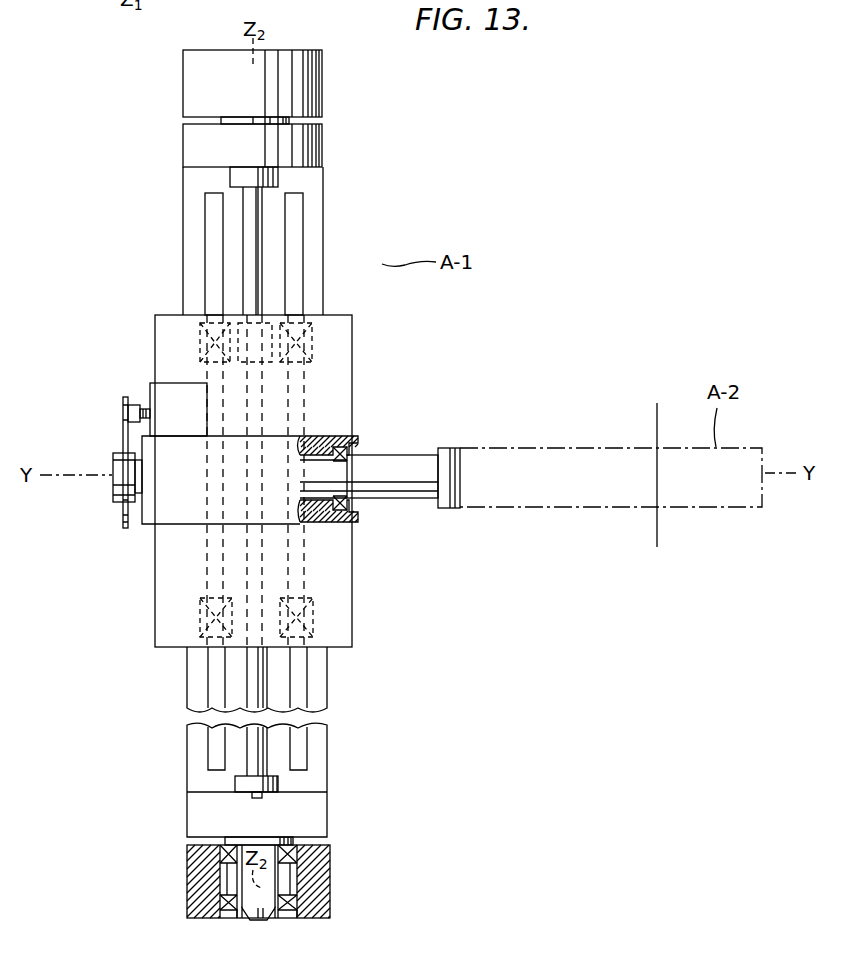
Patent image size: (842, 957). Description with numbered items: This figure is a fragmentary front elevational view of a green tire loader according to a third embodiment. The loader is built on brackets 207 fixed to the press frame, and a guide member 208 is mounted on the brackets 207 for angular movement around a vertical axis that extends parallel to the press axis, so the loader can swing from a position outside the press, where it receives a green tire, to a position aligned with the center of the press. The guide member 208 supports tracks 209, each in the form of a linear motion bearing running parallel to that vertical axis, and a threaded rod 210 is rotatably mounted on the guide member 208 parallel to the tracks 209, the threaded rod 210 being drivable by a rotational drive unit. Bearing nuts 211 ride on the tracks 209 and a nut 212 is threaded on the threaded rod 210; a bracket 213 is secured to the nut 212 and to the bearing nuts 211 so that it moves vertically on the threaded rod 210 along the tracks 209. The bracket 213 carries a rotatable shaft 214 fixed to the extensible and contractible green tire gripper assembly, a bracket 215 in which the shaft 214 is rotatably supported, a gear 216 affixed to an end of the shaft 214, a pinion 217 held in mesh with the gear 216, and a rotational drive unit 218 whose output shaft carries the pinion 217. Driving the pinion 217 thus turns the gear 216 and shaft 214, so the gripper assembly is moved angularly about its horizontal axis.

The brackets 207 is at (322, 92).
The guide member 208 is at (322, 160).
The tracks 209 is at (205, 235).
The threaded rod 210 is at (263, 252).
The bearing nuts 211 is at (200, 327).
The nut 212 is at (268, 318).
The bracket 213 is at (347, 607).
The rotatable shaft 214 is at (420, 498).
The bracket 215 is at (322, 436).
The gear 216 is at (122, 520).
The pinion 217 is at (128, 415).
The rotational drive unit 218 is at (177, 393).